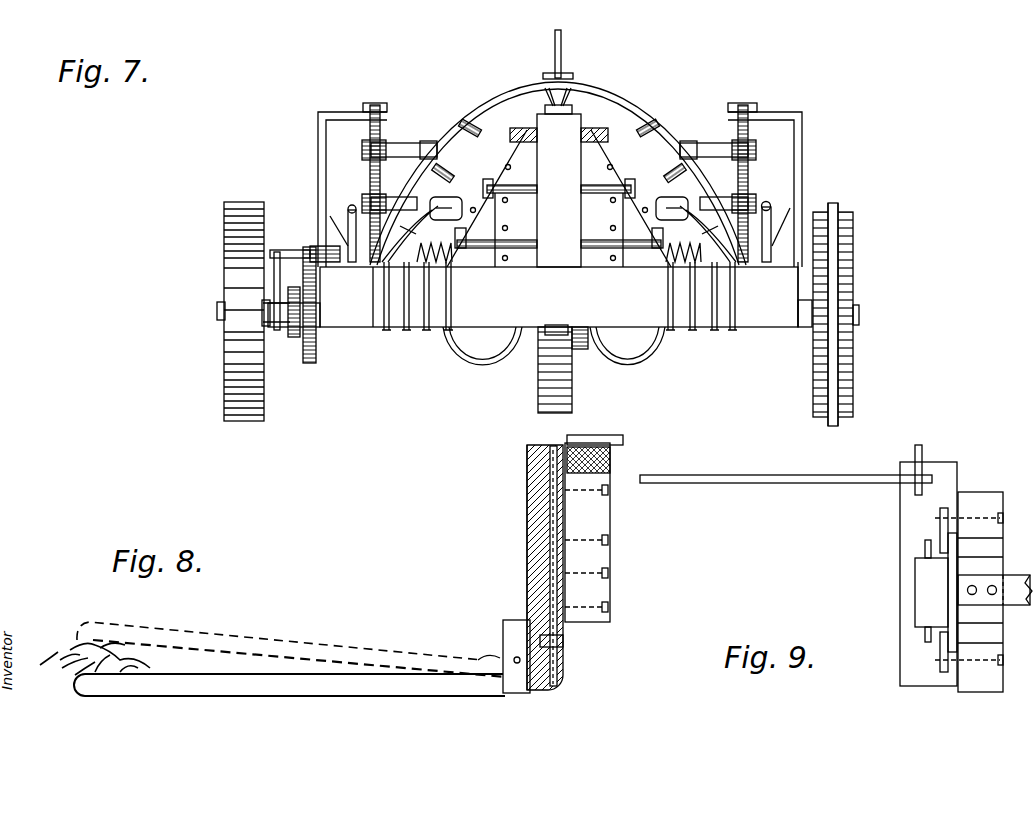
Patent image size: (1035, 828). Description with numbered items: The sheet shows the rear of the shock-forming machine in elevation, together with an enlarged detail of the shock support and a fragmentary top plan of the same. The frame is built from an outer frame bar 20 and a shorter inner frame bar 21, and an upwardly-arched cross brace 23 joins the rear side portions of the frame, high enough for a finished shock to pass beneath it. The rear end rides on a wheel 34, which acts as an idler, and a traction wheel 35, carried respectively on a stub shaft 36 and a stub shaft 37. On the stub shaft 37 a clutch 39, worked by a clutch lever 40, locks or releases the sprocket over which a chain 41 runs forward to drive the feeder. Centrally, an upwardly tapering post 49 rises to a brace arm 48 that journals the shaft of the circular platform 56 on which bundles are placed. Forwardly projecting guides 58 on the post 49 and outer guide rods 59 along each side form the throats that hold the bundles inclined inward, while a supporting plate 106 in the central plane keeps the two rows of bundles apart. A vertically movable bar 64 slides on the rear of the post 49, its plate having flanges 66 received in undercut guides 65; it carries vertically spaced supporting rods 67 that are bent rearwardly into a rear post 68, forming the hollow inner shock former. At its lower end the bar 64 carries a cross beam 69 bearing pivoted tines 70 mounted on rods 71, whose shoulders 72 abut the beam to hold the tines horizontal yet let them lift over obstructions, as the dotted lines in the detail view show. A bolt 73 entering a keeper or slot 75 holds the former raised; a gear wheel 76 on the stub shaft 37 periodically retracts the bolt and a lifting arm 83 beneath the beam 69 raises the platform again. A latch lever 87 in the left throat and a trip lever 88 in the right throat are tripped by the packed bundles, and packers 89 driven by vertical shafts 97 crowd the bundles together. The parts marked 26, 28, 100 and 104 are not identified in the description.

In FIG. 7, the frame bar 20 is at (798, 290).
In FIG. 7, the frame bar 21 is at (372, 290).
In FIG. 7, the upwardly-arched cross brace 23 is at (610, 90).
In FIG. 7, the disc 26 is at (490, 350).
In FIG. 7, the gear 28 is at (538, 386).
In FIG. 7, the wheel 34 is at (853, 335).
In FIG. 7, the traction wheel 35 is at (225, 368).
In FIG. 7, the stub shaft 36 is at (858, 312).
In FIG. 7, the stub shaft 37 is at (217, 308).
In FIG. 7, the clutch 39 is at (224, 335).
In FIG. 7, the clutch lever 40 is at (270, 270).
In FIG. 7, the chain 41 is at (293, 338).
In FIG. 8, the brace arm 48 is at (623, 440).
In FIG. 9, the brace arm 48 is at (995, 603).
In FIG. 7, the upwardly tapering post 49 is at (598, 160).
In FIG. 8, the upwardly tapering post 49 is at (604, 514).
In FIG. 9, the upwardly tapering post 49 is at (990, 508).
In FIG. 7, the circular platform 56 is at (672, 265).
In FIG. 7, the guides 58 is at (474, 207).
In FIG. 7, the outer guide rods 59 is at (450, 178).
In FIG. 8, the vertically movable bar 64 is at (530, 497).
In FIG. 9, the vertically movable bar 64 is at (925, 592).
In FIG. 9, the undercut guides 65 is at (938, 518).
In FIG. 9, the flanges 66 is at (960, 545).
In FIG. 7, the supporting rods 67 is at (512, 194).
In FIG. 9, the supporting rods 67 is at (922, 637).
In FIG. 7, the rear post 68 is at (559, 190).
In FIG. 7, the cross beam 69 is at (559, 297).
In FIG. 8, the cross beam 69 is at (565, 676).
In FIG. 9, the cross beam 69 is at (944, 466).
In FIG. 7, the tines 70 is at (396, 322).
In FIG. 8, the tines 70 is at (278, 684).
In FIG. 9, the tines 70 is at (790, 475).
In FIG. 8, the rods 71 is at (505, 655).
In FIG. 8, the shoulders 72 is at (478, 658).
In FIG. 7, the bolt 73 is at (560, 325).
In FIG. 8, the keeper or slot 75 is at (563, 644).
In FIG. 7, the gear wheel 76 is at (316, 345).
In FIG. 7, the lifting arm 83 is at (580, 350).
In FIG. 7, the latch lever 87 is at (348, 212).
In FIG. 7, the trip lever 88 is at (778, 215).
In FIG. 7, the packers 89 is at (428, 142).
In FIG. 7, the vertical shafts 97 is at (381, 128).
In FIG. 7, the cross bar 100 is at (418, 152).
In FIG. 7, the frame bracket 104 is at (318, 160).
In FIG. 7, the supporting plate 106 is at (560, 44).